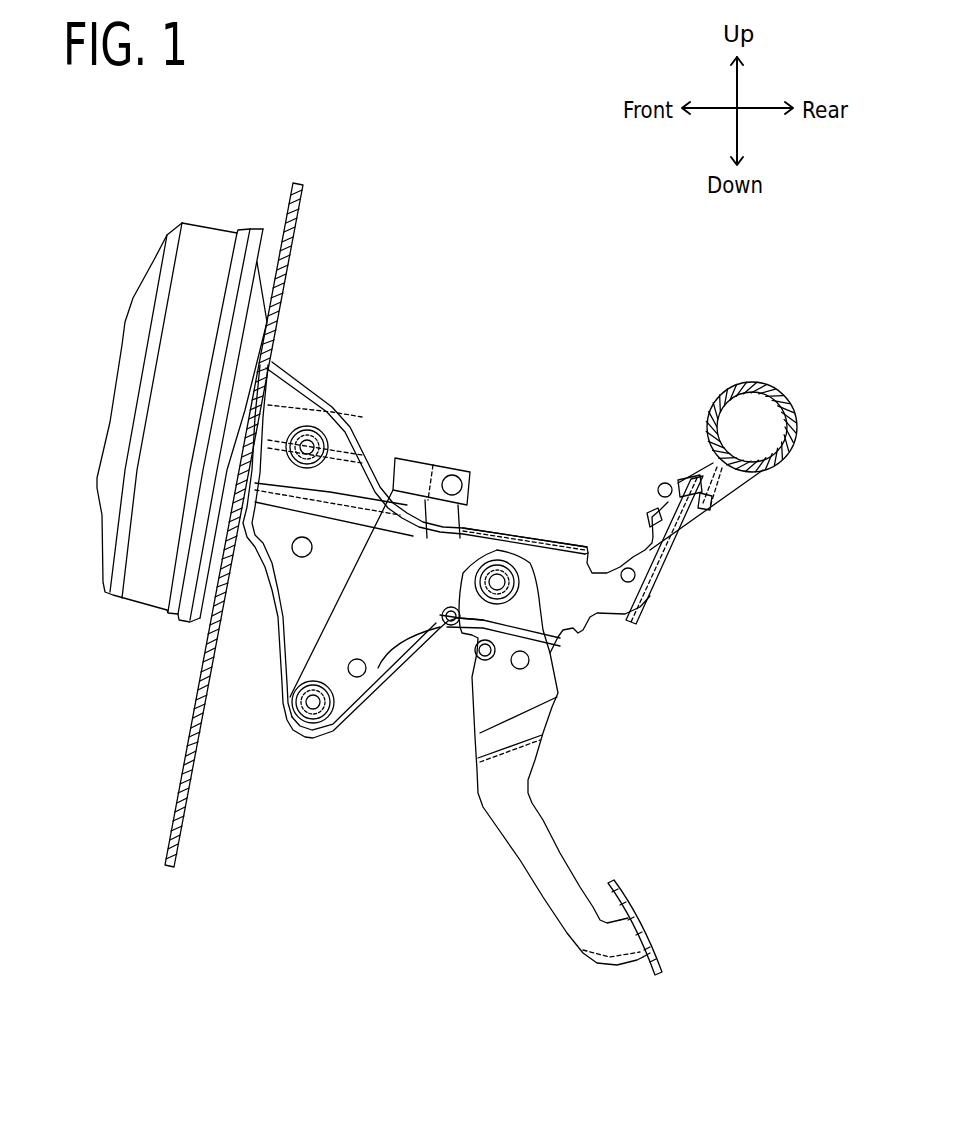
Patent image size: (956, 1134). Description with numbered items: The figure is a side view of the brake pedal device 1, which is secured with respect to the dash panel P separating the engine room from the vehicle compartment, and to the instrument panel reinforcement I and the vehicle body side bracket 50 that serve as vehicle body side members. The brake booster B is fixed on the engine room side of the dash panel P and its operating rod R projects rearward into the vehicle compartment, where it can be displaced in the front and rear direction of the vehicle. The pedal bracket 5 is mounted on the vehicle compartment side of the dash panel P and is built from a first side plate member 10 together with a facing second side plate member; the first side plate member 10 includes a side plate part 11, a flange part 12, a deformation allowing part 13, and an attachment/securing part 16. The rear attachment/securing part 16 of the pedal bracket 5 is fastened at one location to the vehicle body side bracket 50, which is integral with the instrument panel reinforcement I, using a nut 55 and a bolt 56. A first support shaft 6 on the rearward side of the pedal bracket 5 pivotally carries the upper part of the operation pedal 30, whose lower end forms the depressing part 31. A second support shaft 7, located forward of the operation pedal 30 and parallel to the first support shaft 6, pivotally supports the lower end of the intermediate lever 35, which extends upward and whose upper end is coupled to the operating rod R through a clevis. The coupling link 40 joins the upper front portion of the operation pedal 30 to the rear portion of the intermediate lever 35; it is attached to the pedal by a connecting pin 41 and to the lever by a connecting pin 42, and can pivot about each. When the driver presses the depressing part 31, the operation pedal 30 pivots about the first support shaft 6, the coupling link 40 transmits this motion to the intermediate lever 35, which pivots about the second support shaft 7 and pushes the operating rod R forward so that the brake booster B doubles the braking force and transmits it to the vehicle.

The brake pedal device 1 is at (473, 606).
The pedal bracket 5 is at (331, 368).
The first support shaft 6 is at (498, 578).
The second support shaft 7 is at (290, 716).
The first side plate member 10 is at (337, 430).
The side plate part 11 is at (295, 607).
The flange part 12 is at (558, 546).
The deformation allowing part 13 is at (603, 609).
The attachment/securing part 16 is at (652, 588).
The operation pedal 30 is at (528, 830).
The depressing part 31 is at (640, 924).
The intermediate lever 35 is at (458, 517).
The coupling link 40 is at (453, 633).
The connecting pin 41 is at (470, 668).
The connecting pin 42 is at (447, 608).
The vehicle body side bracket 50 is at (742, 486).
The nut 55 is at (677, 480).
The bolt 56 is at (712, 518).
The brake booster B is at (220, 229).
The dash panel P is at (181, 788).
The operating rod R is at (391, 457).
The instrument panel reinforcement I is at (783, 402).